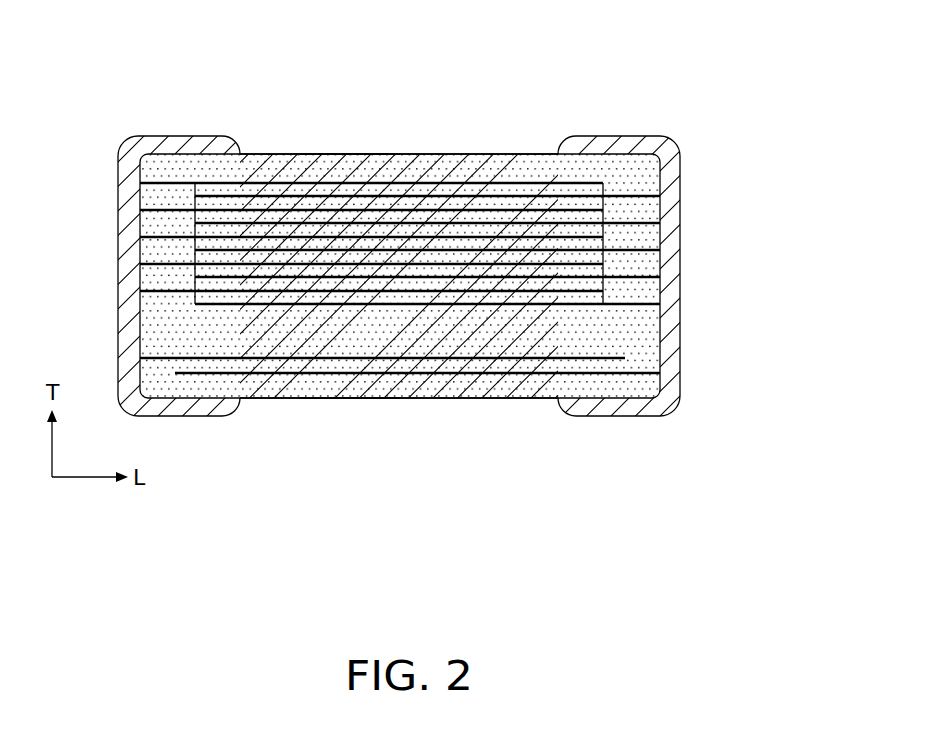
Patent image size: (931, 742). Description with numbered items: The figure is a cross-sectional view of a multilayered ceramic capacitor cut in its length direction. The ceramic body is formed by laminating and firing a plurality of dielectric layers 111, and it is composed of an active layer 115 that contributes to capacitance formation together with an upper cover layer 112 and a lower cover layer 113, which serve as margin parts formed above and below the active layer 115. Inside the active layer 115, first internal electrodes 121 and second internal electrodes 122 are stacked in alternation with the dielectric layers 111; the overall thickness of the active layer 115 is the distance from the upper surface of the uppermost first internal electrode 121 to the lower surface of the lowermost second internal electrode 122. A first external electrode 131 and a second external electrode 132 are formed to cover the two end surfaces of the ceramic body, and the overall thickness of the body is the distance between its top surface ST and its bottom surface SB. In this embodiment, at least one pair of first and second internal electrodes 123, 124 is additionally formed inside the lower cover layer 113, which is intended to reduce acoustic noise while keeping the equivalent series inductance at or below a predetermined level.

The dielectric layer 111 is at (590, 274).
The upper cover layer 112 is at (432, 155).
The lower cover layer 113 is at (430, 398).
The active layer 115 is at (608, 232).
The first internal electrode 121 is at (267, 182).
The second internal electrode 122 is at (610, 195).
The first internal electrode (in lower cover layer) 123 is at (478, 358).
The second internal electrode (in lower cover layer) 124 is at (540, 373).
The first external electrode 131 is at (178, 148).
The second external electrode 132 is at (620, 147).
The top surface ST is at (350, 155).
The bottom surface SB is at (360, 398).